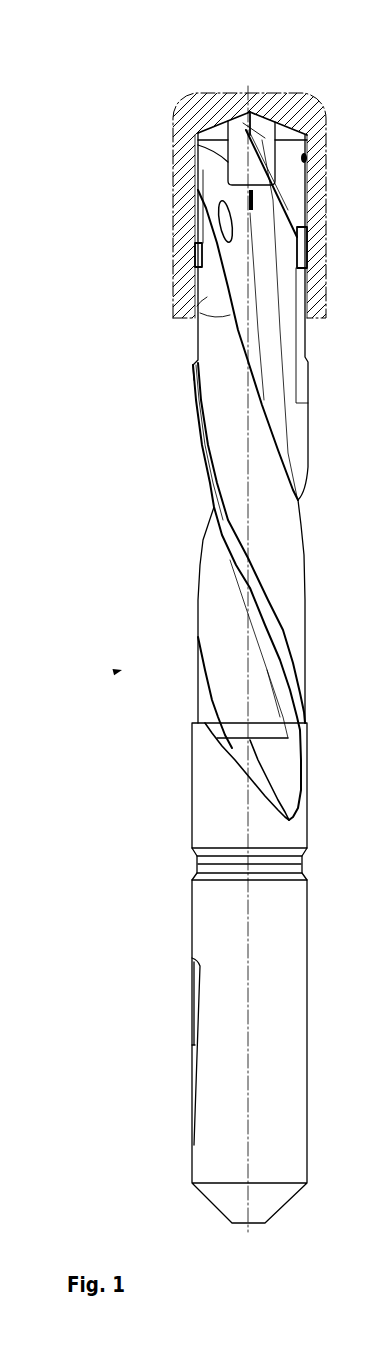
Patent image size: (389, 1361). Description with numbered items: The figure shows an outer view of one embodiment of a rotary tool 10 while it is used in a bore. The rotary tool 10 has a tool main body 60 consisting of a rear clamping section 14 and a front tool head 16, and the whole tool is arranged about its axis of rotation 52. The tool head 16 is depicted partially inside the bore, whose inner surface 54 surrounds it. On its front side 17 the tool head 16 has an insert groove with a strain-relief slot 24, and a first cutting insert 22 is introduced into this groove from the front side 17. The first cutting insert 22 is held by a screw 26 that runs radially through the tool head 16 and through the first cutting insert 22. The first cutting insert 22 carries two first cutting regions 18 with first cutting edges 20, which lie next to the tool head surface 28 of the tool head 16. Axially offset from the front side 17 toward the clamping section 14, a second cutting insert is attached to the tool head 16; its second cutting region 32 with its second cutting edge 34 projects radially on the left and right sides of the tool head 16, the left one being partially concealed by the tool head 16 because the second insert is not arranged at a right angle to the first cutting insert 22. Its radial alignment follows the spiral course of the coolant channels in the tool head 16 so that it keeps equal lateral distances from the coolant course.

The rotary tool 10 is at (123, 142).
The clamping section 14 is at (218, 923).
The tool head 16 is at (220, 603).
The front side 17 is at (252, 92).
The first cutting regions 18 is at (275, 125).
The first cutting edges 20 is at (278, 126).
The first cutting insert 22 is at (235, 121).
The strain-relief slot 24 is at (249, 201).
The screw 26 is at (308, 160).
The tool head surface 28 is at (187, 379).
The second cutting region 32 is at (196, 256).
The second cutting edge 34 is at (251, 286).
The axis of rotation 52 is at (248, 1075).
The inner surface 54 is at (228, 316).
The tool main body 60 is at (114, 672).